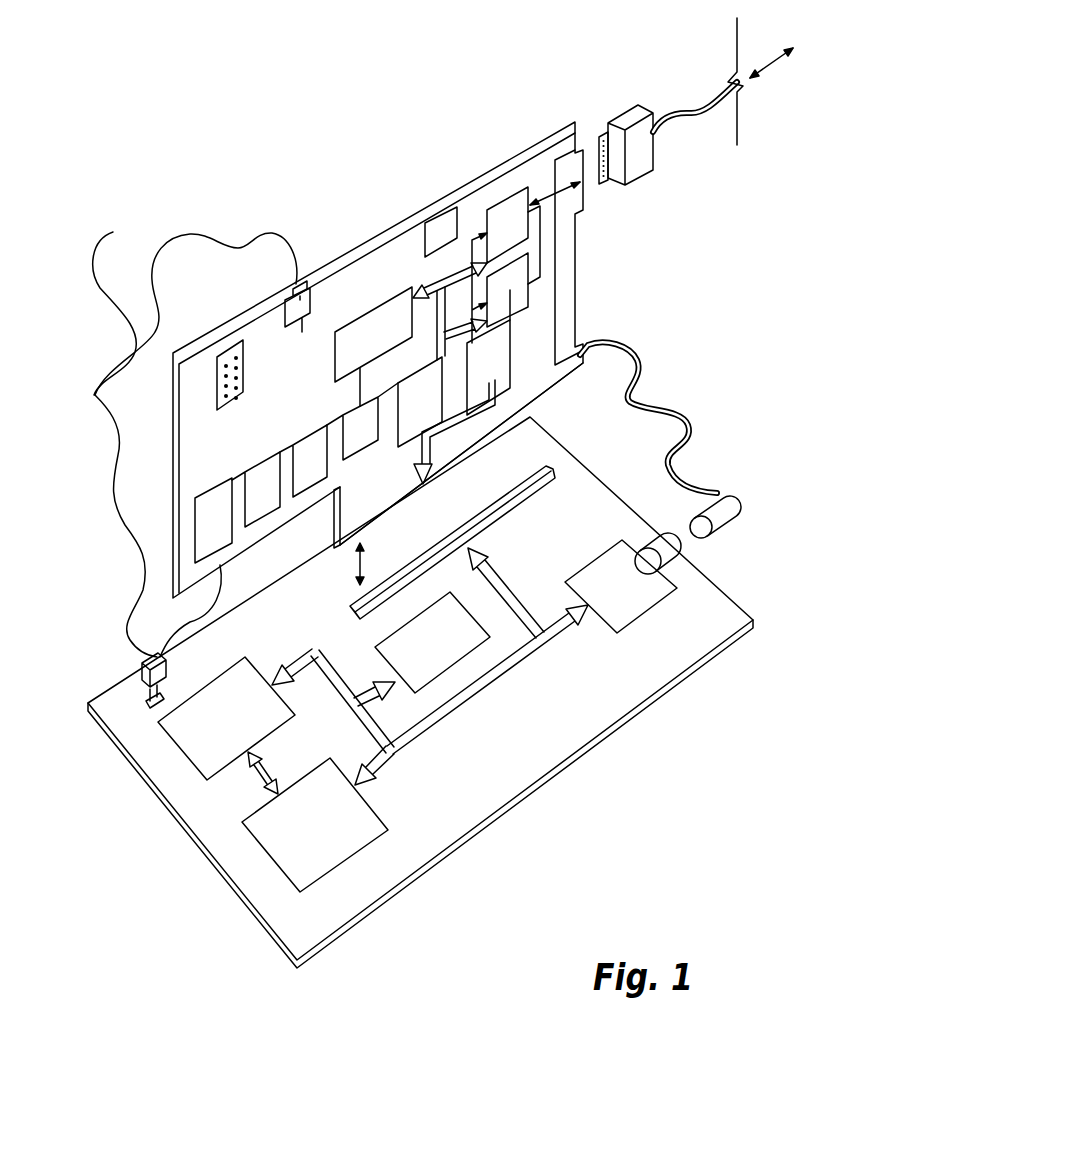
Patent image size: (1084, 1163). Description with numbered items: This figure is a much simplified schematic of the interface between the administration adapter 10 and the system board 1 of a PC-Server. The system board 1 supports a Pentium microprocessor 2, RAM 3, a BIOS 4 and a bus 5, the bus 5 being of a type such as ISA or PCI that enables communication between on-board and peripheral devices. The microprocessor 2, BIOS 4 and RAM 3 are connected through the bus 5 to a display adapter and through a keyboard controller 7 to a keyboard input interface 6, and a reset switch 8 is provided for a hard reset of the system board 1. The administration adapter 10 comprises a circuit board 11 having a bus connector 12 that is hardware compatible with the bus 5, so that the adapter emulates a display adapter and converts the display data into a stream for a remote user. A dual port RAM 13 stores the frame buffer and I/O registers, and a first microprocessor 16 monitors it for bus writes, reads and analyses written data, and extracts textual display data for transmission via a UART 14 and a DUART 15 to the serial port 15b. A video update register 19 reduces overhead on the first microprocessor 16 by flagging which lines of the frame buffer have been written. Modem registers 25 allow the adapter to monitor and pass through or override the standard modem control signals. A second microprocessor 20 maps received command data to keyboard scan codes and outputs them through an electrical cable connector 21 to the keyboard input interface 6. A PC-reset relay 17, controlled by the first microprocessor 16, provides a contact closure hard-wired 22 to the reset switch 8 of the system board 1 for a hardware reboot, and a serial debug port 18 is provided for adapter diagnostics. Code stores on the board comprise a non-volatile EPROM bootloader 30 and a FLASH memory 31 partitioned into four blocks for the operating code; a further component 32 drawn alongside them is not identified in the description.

The system board 1 is at (617, 690).
The microprocessor 2 is at (327, 857).
The RAM 3 is at (212, 750).
The BIOS 4 is at (433, 663).
The bus 5 is at (505, 520).
The input interface 6 is at (665, 550).
The keyboard controller 7 is at (637, 600).
The reset switch 8 is at (147, 705).
The administration adapter 10 is at (383, 163).
The circuit board 11 is at (393, 240).
The bus connector 12 is at (530, 397).
The dual port RAM 13 is at (400, 442).
The UART 14 is at (502, 373).
The DUART 15 is at (525, 197).
The serial port 15b is at (583, 206).
The first microprocessor 16 is at (345, 357).
The PC-reset relay 17 is at (293, 285).
The serial debug port 18 is at (227, 355).
The video update register 19 is at (352, 447).
The second microprocessor 20 is at (448, 213).
The electrical cable connector 21 is at (688, 410).
The hard-wired connection 22 is at (195, 438).
The modem registers 25 is at (518, 293).
The EPROM bootloader 30 is at (205, 495).
The FLASH memory 31 is at (257, 468).
The component 32 is at (307, 442).